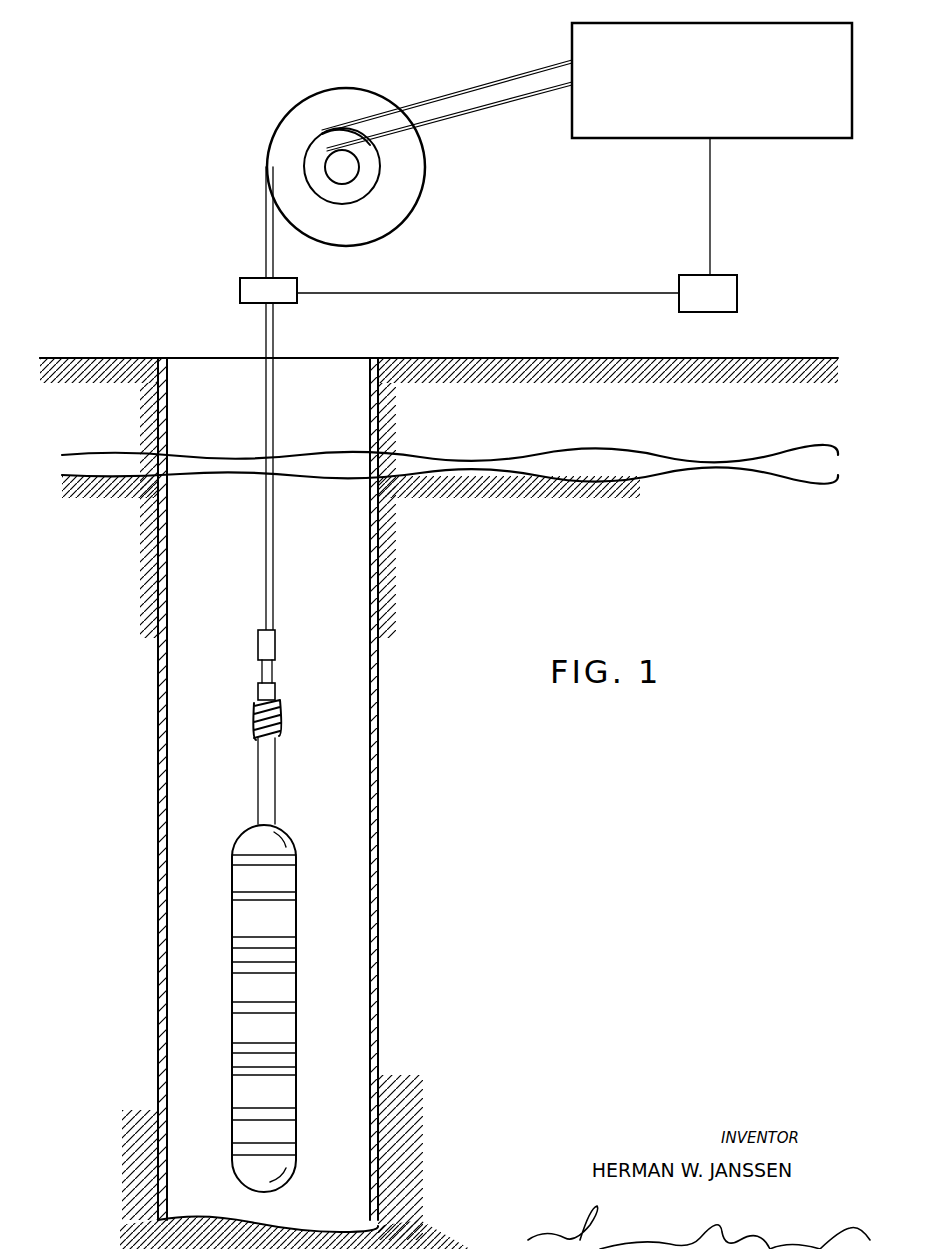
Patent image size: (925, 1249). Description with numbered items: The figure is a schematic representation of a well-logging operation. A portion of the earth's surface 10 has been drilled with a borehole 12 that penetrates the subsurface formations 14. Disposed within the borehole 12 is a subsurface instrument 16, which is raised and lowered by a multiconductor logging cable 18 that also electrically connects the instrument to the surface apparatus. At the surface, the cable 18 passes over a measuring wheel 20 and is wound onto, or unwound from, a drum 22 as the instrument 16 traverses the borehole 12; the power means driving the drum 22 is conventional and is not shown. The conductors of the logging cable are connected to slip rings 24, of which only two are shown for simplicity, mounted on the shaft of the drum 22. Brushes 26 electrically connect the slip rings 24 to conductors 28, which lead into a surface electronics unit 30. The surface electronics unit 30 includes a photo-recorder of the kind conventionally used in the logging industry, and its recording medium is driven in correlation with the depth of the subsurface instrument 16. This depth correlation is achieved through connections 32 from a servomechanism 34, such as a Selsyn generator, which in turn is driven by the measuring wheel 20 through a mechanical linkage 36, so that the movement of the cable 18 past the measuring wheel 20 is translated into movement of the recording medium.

The earth's surface 10 is at (113, 356).
The borehole 12 is at (200, 372).
The subsurface formations 14 is at (497, 582).
The subsurface instrument 16 is at (290, 828).
The multiconductor logging cable 18 is at (273, 675).
The measuring wheel 20 is at (240, 283).
The drum 22 is at (268, 143).
The slip rings 24 is at (388, 177).
The brushes 26 is at (338, 128).
The conductors 28 is at (453, 113).
The surface electronics unit 30 is at (600, 138).
The connections 32 is at (711, 178).
The servomechanism 34 is at (742, 292).
The mechanical linkage 36 is at (443, 292).